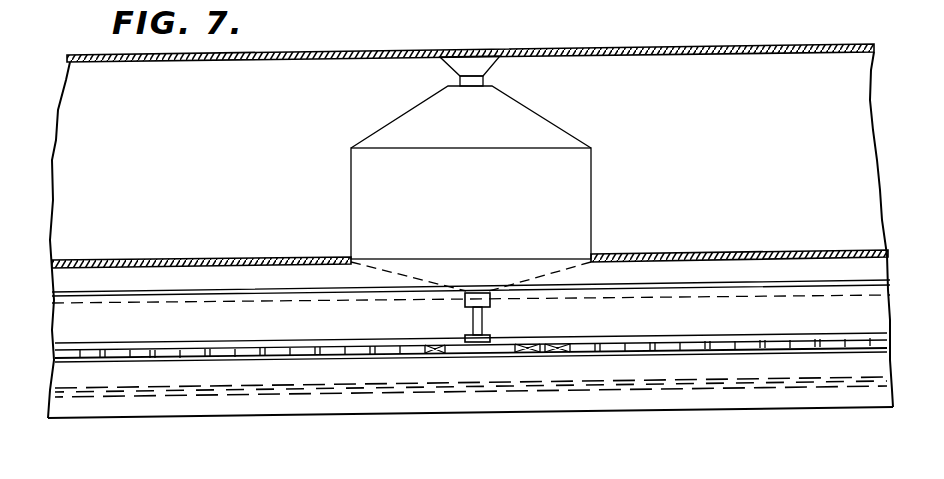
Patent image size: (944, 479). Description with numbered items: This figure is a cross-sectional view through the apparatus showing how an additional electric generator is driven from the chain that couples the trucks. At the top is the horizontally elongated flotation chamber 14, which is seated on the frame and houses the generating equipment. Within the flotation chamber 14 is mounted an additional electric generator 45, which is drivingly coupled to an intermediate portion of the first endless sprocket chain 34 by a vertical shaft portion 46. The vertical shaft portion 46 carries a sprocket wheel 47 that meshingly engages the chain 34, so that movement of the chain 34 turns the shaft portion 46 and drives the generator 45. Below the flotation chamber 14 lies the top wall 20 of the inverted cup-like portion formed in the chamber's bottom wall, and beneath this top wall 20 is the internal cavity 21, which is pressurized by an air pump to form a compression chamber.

The flotation chamber 14 is at (342, 50).
The additional electric generator 45 is at (578, 211).
The top wall 20 is at (717, 282).
The first endless sprocket chain 34 is at (320, 344).
The vertical shaft portion 46 is at (484, 323).
The sprocket wheel 47 is at (466, 347).
The internal cavity 21 is at (641, 370).